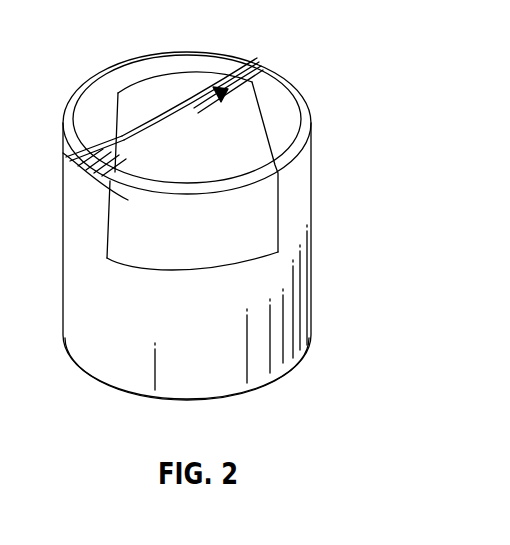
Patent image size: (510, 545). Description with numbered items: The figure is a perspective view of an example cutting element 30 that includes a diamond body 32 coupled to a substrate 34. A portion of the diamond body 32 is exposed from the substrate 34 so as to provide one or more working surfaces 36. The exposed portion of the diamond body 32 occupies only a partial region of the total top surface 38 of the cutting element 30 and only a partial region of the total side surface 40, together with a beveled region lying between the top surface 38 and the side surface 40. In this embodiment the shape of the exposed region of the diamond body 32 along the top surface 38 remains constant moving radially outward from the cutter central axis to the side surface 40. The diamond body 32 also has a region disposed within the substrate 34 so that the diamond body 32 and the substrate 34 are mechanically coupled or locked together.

The cutting element 30 is at (331, 215).
The diamond body 32 is at (226, 77).
The substrate 34 is at (296, 311).
The working surfaces 36 is at (66, 156).
The total top surface 38 is at (113, 80).
The total side surface 40 is at (306, 156).